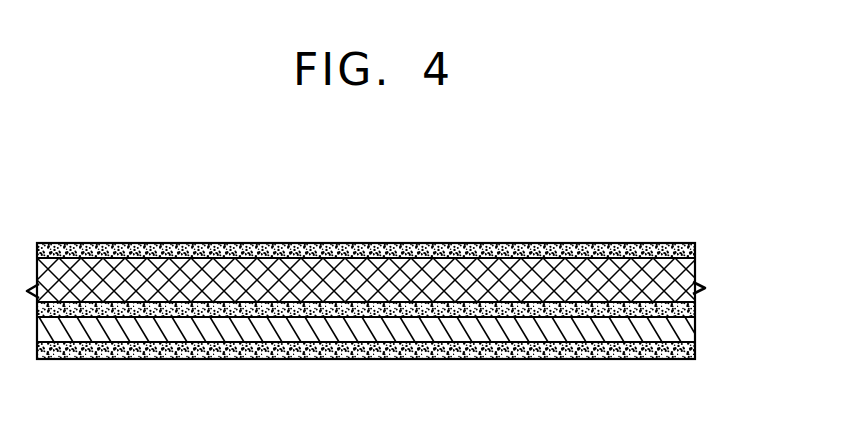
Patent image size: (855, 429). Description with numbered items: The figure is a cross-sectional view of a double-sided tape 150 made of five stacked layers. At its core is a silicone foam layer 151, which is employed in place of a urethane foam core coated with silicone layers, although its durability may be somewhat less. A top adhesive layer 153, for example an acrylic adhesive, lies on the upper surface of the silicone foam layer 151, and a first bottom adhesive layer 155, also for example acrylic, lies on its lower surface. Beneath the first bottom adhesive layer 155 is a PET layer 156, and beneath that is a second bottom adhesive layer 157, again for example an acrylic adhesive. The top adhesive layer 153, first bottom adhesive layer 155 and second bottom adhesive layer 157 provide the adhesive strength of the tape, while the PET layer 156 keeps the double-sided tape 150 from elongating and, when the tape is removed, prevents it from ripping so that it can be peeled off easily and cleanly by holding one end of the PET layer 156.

The double-sided tape 150 is at (786, 248).
The silicone foam layer 151 is at (704, 288).
The top adhesive layer 153 is at (697, 248).
The first bottom adhesive layer 155 is at (697, 311).
The PET layer 156 is at (690, 328).
The second bottom adhesive layer 157 is at (697, 353).